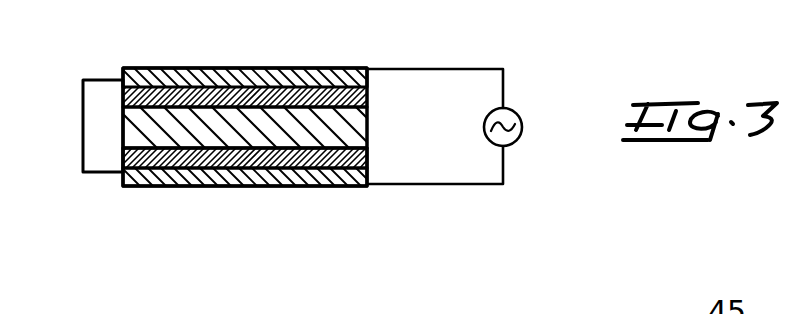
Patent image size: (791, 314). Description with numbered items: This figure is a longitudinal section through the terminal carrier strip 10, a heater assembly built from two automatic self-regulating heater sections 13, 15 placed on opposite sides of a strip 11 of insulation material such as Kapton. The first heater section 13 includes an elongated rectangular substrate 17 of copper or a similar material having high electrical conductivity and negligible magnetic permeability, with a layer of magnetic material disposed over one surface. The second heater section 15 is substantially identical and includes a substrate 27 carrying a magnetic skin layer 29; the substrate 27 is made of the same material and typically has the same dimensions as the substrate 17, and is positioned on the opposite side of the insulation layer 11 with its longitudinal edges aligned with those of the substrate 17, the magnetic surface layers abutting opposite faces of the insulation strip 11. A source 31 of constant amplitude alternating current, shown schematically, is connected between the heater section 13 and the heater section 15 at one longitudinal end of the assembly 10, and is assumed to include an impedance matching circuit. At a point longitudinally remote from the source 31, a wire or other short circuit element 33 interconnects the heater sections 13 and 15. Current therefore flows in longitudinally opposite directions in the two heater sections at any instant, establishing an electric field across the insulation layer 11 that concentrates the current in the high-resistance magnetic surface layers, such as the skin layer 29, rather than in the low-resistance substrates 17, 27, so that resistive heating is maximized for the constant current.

The terminal carrier strip 10 is at (112, 222).
The strip of insulation material 11 is at (203, 135).
The heater section 13 is at (377, 63).
The second heater section 15 is at (377, 145).
The substrate 17 is at (262, 68).
The substrate 27 is at (337, 180).
The magnetic skin layer 29 is at (270, 157).
The source of constant amplitude alternating current 31 is at (517, 112).
The short circuit element 33 is at (83, 128).